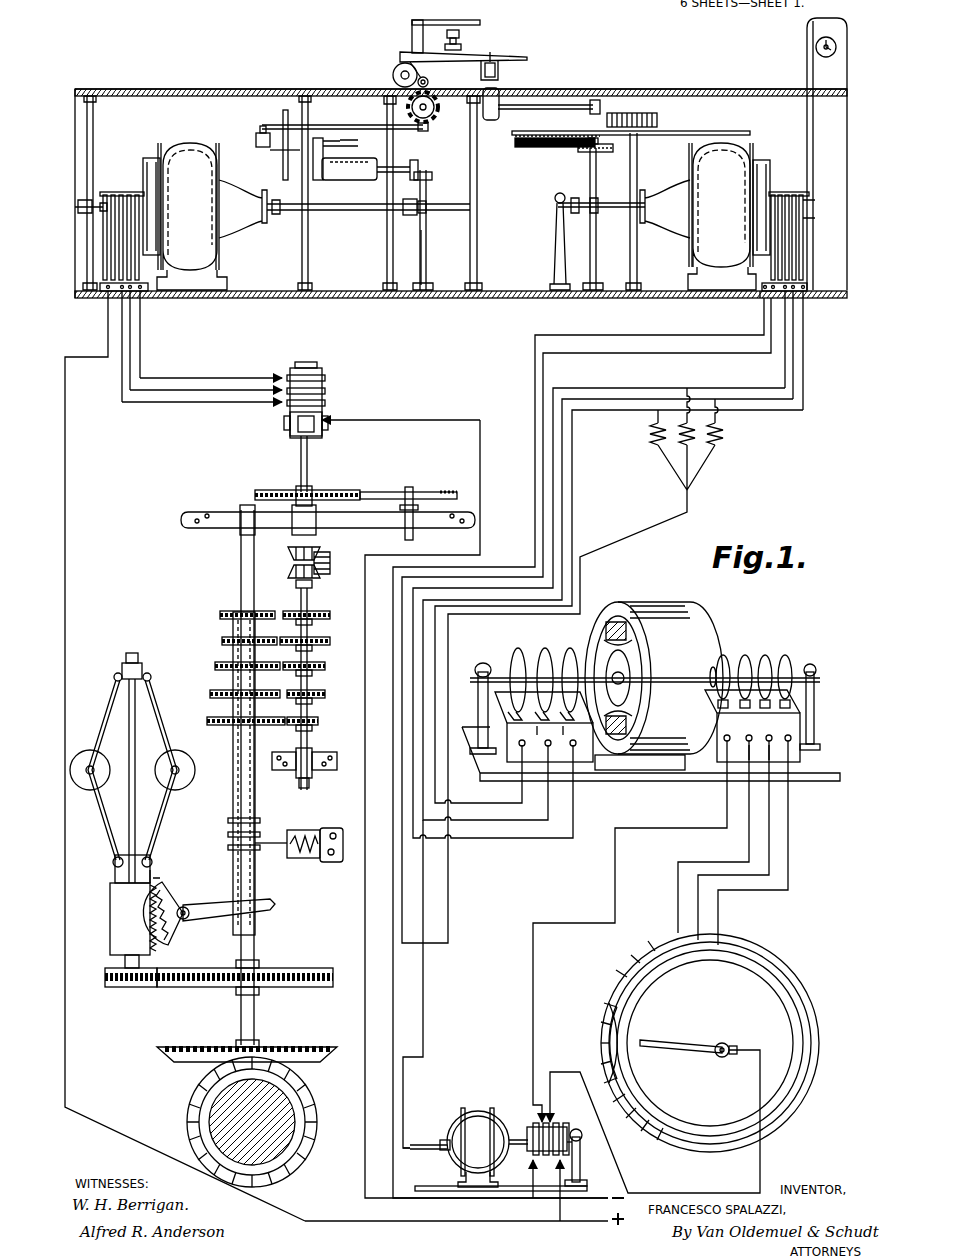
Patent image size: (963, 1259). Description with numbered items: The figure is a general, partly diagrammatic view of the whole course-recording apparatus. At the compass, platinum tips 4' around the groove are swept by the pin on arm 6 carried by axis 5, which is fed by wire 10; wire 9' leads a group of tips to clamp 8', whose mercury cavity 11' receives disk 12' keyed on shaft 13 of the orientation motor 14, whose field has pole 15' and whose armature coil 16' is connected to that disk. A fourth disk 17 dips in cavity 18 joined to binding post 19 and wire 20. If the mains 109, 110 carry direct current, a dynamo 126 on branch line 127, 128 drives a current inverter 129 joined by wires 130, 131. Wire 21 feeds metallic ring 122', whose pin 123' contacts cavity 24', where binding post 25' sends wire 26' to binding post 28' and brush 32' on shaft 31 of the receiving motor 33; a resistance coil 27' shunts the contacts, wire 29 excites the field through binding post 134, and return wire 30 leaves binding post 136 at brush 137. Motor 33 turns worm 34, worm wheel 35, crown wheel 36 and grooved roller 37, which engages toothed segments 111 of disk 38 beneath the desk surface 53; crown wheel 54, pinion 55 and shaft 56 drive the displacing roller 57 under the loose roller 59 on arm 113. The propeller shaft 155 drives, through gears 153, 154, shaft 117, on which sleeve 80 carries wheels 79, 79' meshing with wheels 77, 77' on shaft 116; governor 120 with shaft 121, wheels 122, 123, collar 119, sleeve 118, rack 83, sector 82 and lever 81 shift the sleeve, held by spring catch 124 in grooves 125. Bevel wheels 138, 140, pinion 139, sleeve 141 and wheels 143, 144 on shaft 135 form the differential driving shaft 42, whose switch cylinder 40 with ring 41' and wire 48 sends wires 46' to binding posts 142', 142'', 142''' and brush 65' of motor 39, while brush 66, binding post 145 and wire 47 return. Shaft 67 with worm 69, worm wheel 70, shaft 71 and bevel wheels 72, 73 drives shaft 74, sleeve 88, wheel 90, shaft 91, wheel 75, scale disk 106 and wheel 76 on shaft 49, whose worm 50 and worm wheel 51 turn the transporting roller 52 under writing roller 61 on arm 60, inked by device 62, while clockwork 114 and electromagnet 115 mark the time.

The platinum tip 4' is at (710, 1043).
The axis 5 is at (727, 1044).
The arm 6 is at (694, 1042).
The clamp 8' is at (739, 729).
The wire 9' is at (713, 839).
The wire 10 is at (688, 1193).
The cavity 11' is at (758, 747).
The disk 12' is at (735, 664).
The shaft 13 is at (816, 676).
The orientation motor 14 is at (654, 686).
The magnetic pole 15' is at (634, 629).
The coil 16' is at (636, 643).
The fourth disk 17 is at (720, 650).
The cavity 18 is at (718, 704).
The fourth binding post 19 is at (752, 726).
The wire 20 is at (652, 826).
The wire 21 is at (630, 538).
The cavity 24' is at (488, 708).
The binding post 25' is at (544, 727).
The wire 26' is at (619, 607).
The non-inductive resistance coil 27' is at (640, 427).
The binding post 28' is at (809, 313).
The wire 29 is at (636, 352).
The return wire 30 is at (394, 972).
The shaft 31 is at (610, 210).
The brush 32' is at (815, 237).
The receiving motor 33 is at (722, 216).
The worm 34 is at (580, 200).
The worm wheel 35 is at (600, 203).
The crown wheel 36 is at (582, 152).
The grooved roller 37 is at (527, 147).
The toothed disk 38 is at (730, 128).
The electric motor 39 is at (192, 216).
The insulating cylinder 40 is at (323, 434).
The continuous metallic ring 41' is at (322, 398).
The shaft 42 is at (300, 454).
The wire 46' is at (202, 412).
The return wire 47 is at (65, 470).
The wire 48 is at (410, 420).
The shaft 49 is at (350, 124).
The worm 50 is at (415, 128).
The worm wheel 51 is at (437, 110).
The transporting roller 52 is at (430, 128).
The surface 53 is at (735, 89).
The crown wheel 54 is at (658, 120).
The pinion 55 is at (601, 110).
The shaft 56 is at (554, 110).
The displacing roller 57 is at (500, 115).
The loose roller 59 is at (500, 73).
The arm 60 is at (402, 52).
The writing roller 61 is at (429, 80).
The inking device 62 is at (392, 73).
The brush 65' is at (122, 219).
The fourth brush 66 is at (103, 195).
The shaft 67 is at (338, 212).
The worm 69 is at (412, 218).
The worm wheel 70 is at (428, 208).
The shaft 71 is at (428, 242).
The bevel wheel 72 is at (430, 176).
The bevel wheel 73 is at (418, 165).
The shaft 74 is at (396, 174).
The wheel 75 is at (263, 148).
The wheel 76 is at (266, 122).
The toothed wheel 77 is at (319, 612).
The toothed wheel 77' is at (319, 639).
The toothed wheel 79 is at (230, 609).
The toothed wheel 79' is at (230, 634).
The sleeve 80 is at (232, 783).
The shifting lever 81 is at (218, 904).
The toothed sector 82 is at (188, 922).
The toothed rack 83 is at (160, 953).
The sleeve 88 is at (358, 180).
The wheel 90 is at (330, 140).
The shaft 91 is at (355, 145).
The disk 106 is at (258, 209).
The main 109 is at (514, 1222).
The main 110 is at (436, 1199).
The toothed segment 111 is at (678, 135).
The arm 113 is at (510, 62).
The clock work device 114 is at (827, 154).
The electromagnet 115 is at (462, 36).
The shaft 116 is at (310, 598).
The shaft 117 is at (240, 577).
The sleeve 118 is at (132, 859).
The collar 119 is at (155, 878).
The centrifugal governor 120 is at (195, 770).
The shaft 121 is at (132, 768).
The toothed wheel 122 is at (131, 996).
The metallic ring 122' is at (512, 666).
The toothed wheel 123 is at (245, 992).
The projecting pin 123' is at (493, 681).
The spring catch 124 is at (278, 838).
The groove 125 is at (228, 830).
The dynamo 126 is at (474, 1110).
The branch line 127 is at (424, 1145).
The branch line 128 is at (424, 1150).
The current inverter 129 is at (570, 1120).
The wire 130 is at (519, 1179).
The wire 131 is at (583, 1175).
The binding post 134 is at (762, 296).
The shaft 135 is at (413, 538).
The binding post 136 is at (764, 300).
The brush 137 is at (760, 208).
The conical wheel 138 is at (290, 570).
The loose pinion 139 is at (330, 562).
The conical wheel 140 is at (290, 550).
The sleeve 141 is at (292, 506).
The binding post 142' is at (165, 334).
The binding post 142'' is at (155, 340).
The binding post 142''' is at (91, 346).
The cylindrical wheel 143 is at (434, 491).
The wheel 144 is at (330, 490).
The binding post 145 is at (106, 293).
The gear 153 is at (162, 1060).
The gear 154 is at (190, 1094).
The propeller shaft 155 is at (298, 1112).